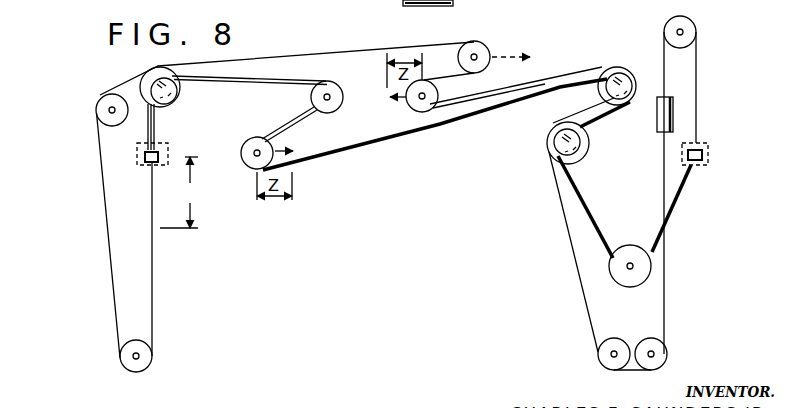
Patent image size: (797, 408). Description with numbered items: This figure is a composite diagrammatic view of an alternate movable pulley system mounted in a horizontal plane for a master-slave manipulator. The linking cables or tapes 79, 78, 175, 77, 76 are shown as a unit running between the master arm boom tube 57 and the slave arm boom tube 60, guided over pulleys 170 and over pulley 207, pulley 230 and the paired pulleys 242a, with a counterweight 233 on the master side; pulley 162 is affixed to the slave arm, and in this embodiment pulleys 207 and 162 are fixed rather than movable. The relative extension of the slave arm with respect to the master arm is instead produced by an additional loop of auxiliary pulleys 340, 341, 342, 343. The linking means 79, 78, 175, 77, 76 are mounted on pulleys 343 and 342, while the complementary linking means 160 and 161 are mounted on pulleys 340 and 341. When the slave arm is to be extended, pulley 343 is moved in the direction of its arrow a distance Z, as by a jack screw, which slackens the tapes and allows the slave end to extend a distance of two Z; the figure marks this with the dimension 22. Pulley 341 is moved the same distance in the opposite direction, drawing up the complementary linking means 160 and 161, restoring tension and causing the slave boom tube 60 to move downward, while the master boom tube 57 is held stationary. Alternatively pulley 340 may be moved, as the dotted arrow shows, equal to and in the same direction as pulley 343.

The pulley 170 is at (100, 101).
The slave arm boom tube 60 is at (148, 165).
The travel distance 22 is at (180, 192).
The complementary linking means 160 is at (98, 235).
The complementary linking means 161 is at (107, 233).
The pulley 162 is at (136, 362).
The auxiliary pulley 343 is at (246, 162).
The auxiliary pulley 342 is at (337, 108).
The auxiliary pulley 341 is at (438, 93).
The auxiliary pulley 340 is at (486, 47).
The linking tape 76 is at (435, 147).
The linking tape 77 is at (435, 147).
The linking tape 78 is at (435, 147).
The linking tape 79 is at (435, 147).
The linking tape 175 is at (377, 140).
The pulley 230 is at (692, 22).
The counterweight 233 is at (661, 117).
The master arm boom tube 57 is at (708, 153).
The pulley 207 is at (633, 283).
The pulley 242a is at (600, 366).